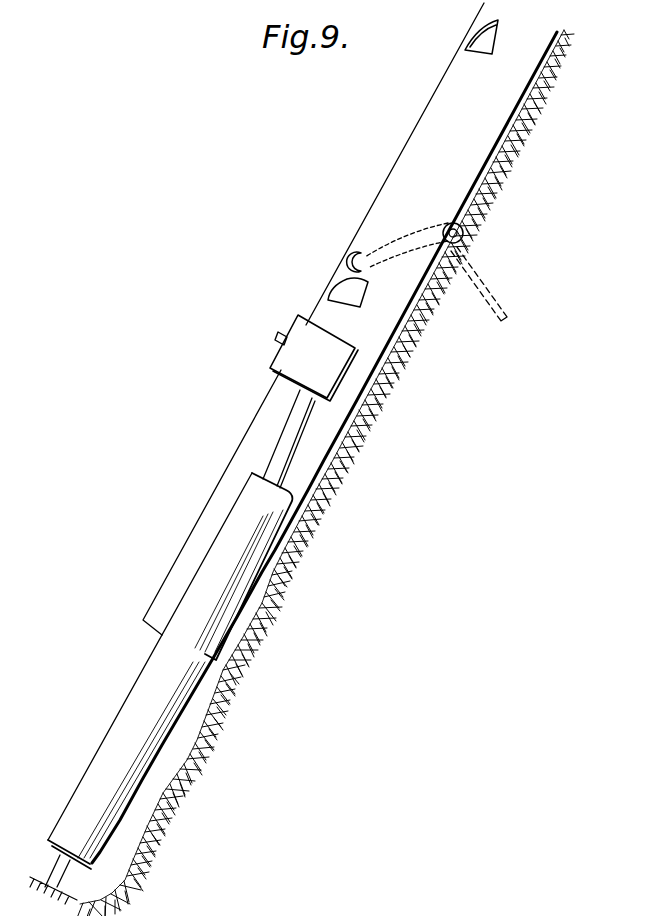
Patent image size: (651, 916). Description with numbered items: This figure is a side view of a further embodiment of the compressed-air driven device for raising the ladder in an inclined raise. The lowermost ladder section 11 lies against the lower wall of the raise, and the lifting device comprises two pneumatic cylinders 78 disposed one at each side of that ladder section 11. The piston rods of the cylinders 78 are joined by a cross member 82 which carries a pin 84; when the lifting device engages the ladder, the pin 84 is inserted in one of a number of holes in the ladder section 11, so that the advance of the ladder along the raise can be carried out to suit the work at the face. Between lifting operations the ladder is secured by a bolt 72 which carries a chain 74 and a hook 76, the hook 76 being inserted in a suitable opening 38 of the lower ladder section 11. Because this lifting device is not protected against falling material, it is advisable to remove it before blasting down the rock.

The ladder section 11 is at (389, 200).
The pneumatic cylinder 78 is at (172, 657).
The cross member 82 is at (285, 368).
The pin 84 is at (278, 337).
The hook 76 is at (365, 278).
The ladder section opening 38 is at (357, 295).
The chain 74 is at (467, 240).
The bolt 72 is at (493, 287).